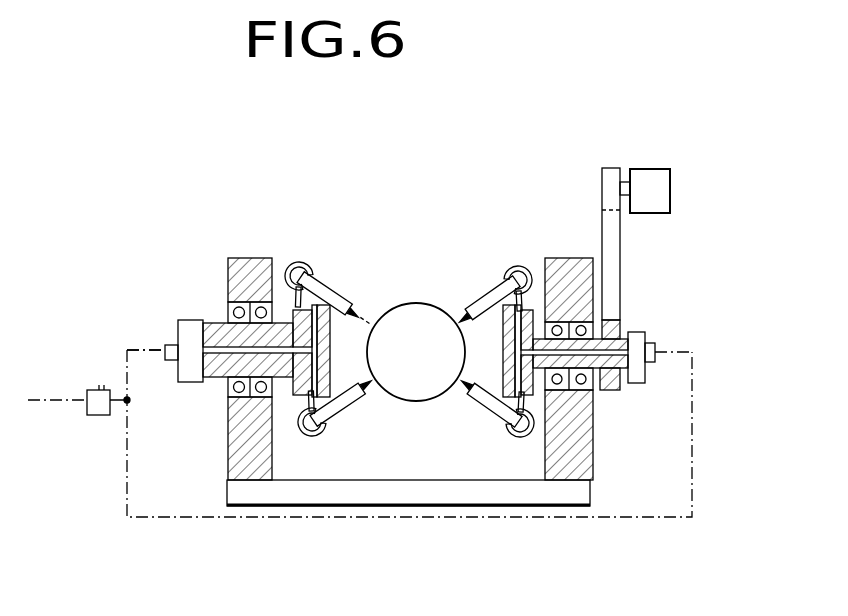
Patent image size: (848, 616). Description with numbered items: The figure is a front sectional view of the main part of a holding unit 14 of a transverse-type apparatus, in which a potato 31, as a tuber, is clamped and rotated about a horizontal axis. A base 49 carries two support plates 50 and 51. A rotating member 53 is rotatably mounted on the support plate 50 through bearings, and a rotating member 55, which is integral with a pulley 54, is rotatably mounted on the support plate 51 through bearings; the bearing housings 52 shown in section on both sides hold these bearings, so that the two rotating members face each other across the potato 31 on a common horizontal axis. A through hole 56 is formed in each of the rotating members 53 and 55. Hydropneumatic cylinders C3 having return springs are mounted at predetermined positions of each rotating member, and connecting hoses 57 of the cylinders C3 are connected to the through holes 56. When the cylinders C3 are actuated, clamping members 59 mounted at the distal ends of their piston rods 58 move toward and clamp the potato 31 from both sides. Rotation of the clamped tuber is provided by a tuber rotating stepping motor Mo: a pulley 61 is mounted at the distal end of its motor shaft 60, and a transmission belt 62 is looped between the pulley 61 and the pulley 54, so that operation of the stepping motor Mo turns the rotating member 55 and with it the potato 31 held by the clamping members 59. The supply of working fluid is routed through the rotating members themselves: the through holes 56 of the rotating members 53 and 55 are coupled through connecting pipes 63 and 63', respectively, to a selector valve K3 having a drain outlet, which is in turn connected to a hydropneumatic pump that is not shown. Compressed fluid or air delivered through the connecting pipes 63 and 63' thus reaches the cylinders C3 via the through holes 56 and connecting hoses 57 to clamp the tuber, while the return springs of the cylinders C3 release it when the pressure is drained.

The holding unit 14 is at (443, 216).
The potato 31 is at (416, 301).
The base 49 is at (330, 508).
The support plate 50 is at (228, 448).
The support plate 51 is at (592, 466).
The bearing housing 52 is at (228, 300).
The rotating member 53 is at (212, 380).
The pulley 54 is at (634, 384).
The rotating member 55 is at (618, 392).
The through hole 56 is at (216, 323).
The connecting hose 57 is at (297, 262).
The piston rod 58 is at (330, 350).
The clamping member 59 is at (366, 322).
The motor shaft 60 is at (626, 178).
The pulley 61 is at (602, 183).
The transmission belt 62 is at (620, 268).
The connecting pipe 63 is at (409, 468).
The connecting pipe 63' is at (141, 319).
The hydropneumatic cylinder C3 is at (336, 297).
The selector valve K3 is at (90, 418).
The tuber rotating stepping motor Mo is at (670, 198).